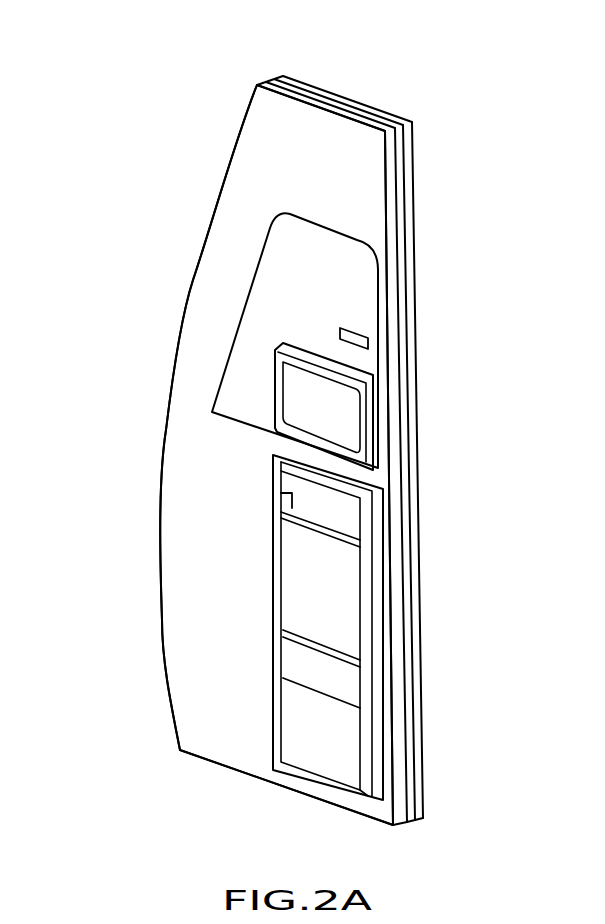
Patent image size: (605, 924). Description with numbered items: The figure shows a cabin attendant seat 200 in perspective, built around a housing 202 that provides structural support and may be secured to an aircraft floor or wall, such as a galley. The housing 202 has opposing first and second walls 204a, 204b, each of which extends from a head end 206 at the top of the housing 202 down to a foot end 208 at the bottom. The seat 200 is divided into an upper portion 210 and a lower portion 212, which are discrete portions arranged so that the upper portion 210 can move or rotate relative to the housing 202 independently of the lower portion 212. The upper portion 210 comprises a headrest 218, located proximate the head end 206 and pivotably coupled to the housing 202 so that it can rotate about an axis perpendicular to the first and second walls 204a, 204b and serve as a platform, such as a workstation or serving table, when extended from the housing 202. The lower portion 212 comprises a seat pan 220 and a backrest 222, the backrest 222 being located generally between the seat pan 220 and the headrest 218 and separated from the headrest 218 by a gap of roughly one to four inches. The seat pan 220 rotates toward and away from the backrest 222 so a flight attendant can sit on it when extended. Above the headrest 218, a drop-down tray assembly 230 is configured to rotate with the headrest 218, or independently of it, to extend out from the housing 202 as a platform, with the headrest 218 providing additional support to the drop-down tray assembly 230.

The cabin attendant seat 200 is at (120, 42).
The housing 202 is at (195, 282).
The first wall 204a is at (160, 594).
The second wall 204b is at (409, 251).
The head end 206 is at (344, 98).
The foot end 208 is at (247, 774).
The upper portion 210 is at (472, 297).
The lower portion 212 is at (460, 604).
The headrest 218 is at (337, 423).
The seat pan 220 is at (327, 565).
The backrest 222 is at (338, 505).
The drop-down tray assembly 230 is at (327, 283).